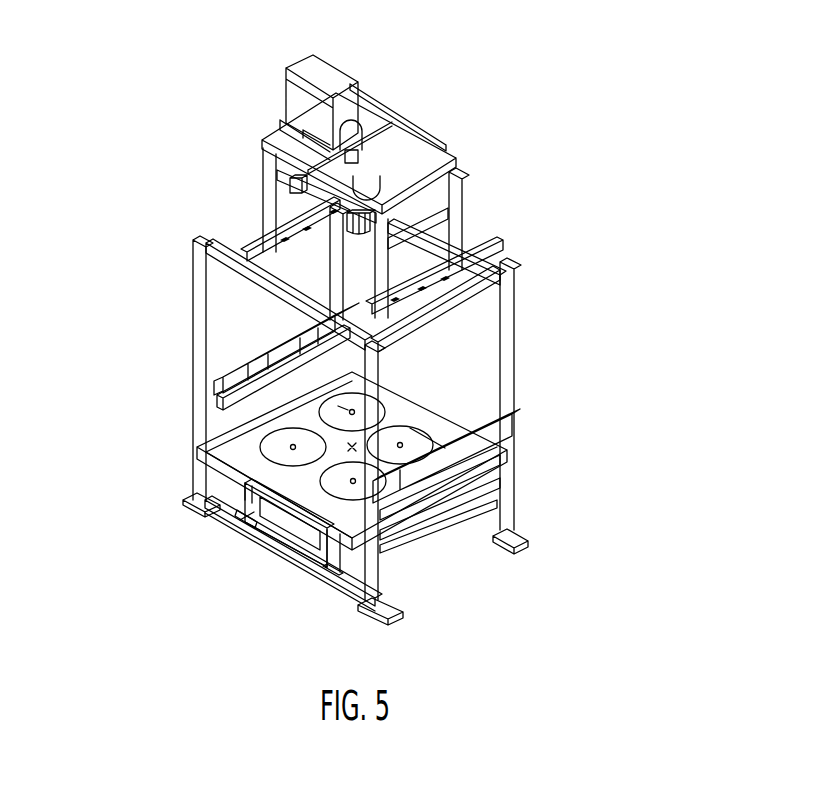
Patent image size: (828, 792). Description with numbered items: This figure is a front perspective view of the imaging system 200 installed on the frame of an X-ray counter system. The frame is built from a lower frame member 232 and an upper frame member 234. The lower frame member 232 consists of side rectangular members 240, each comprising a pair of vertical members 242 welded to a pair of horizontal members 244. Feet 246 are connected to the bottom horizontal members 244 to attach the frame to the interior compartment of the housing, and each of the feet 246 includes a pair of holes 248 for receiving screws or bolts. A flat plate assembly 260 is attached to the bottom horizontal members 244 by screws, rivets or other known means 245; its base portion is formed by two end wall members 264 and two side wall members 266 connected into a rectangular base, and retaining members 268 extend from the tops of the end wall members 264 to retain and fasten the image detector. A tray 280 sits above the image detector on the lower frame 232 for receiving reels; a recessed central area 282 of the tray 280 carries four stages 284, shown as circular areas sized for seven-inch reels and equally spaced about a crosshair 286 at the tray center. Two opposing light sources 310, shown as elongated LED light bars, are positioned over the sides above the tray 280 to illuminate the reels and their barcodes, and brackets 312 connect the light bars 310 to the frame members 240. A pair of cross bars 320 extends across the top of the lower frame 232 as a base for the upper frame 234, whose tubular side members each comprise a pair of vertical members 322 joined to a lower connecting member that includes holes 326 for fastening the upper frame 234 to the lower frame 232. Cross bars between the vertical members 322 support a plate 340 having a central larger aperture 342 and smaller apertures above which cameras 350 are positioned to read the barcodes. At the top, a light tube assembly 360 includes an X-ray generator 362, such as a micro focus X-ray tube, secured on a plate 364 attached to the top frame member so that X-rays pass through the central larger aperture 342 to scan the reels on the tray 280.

The imaging system 200 is at (646, 254).
The lower frame member 232 is at (547, 262).
The upper frame member 234 is at (497, 155).
The side rectangular members 240 is at (378, 567).
The vertical members 242 is at (514, 443).
The horizontal members 244 is at (215, 502).
The screws, rivets or other known means 245 is at (250, 487).
The feet 246 is at (523, 535).
The holes 248 is at (383, 615).
The flat plate assembly 260 is at (277, 536).
The end wall members 264 is at (292, 572).
The side wall members 266 is at (326, 578).
The retaining members 268 is at (240, 516).
The tray 280 is at (405, 395).
The recessed central area 282 is at (415, 425).
The stages 284 is at (340, 407).
The crosshair 286 is at (356, 455).
The light sources 310 is at (223, 405).
The brackets 312 is at (507, 420).
The cross bars 320 is at (464, 209).
The vertical members 322 is at (392, 124).
The holes 326 is at (453, 273).
The plate 340 is at (433, 212).
The central larger aperture 342 is at (365, 176).
The cameras 350 is at (290, 188).
The light tube assembly 360 is at (284, 100).
The X-ray generator 362 is at (322, 75).
The plate 364 is at (365, 118).